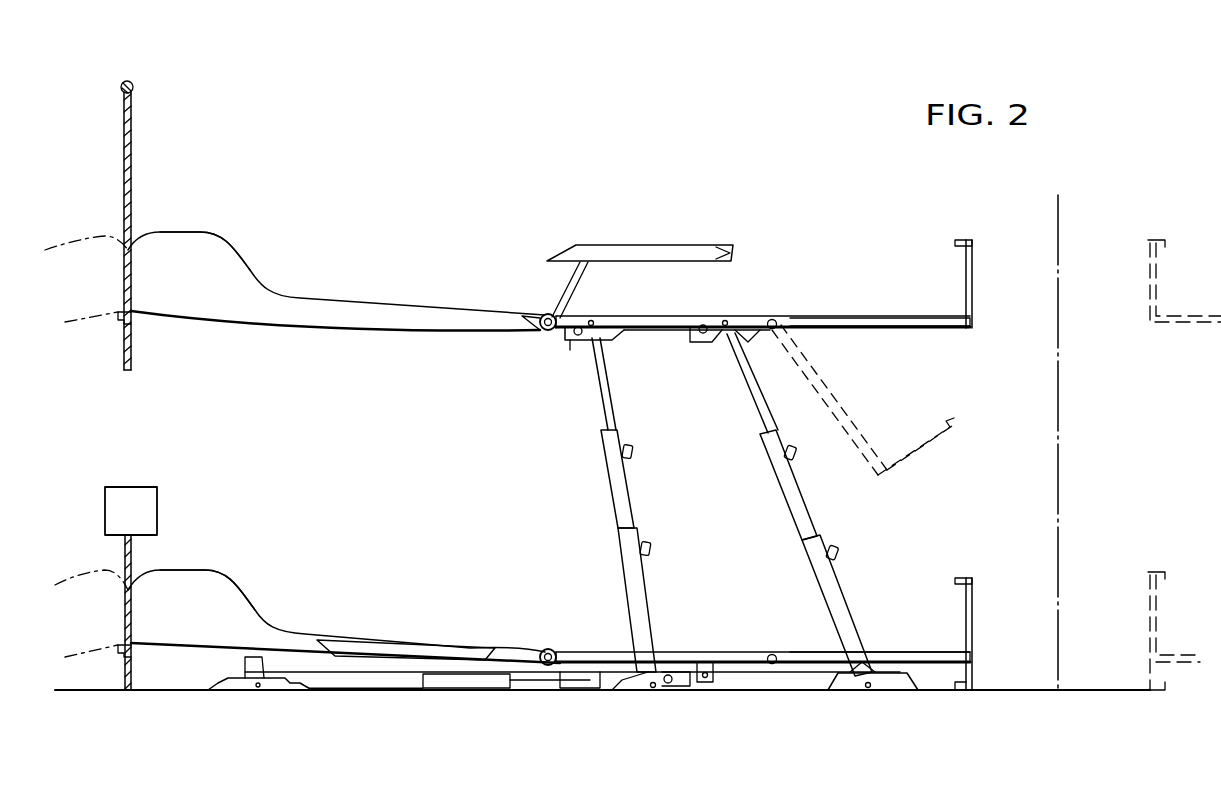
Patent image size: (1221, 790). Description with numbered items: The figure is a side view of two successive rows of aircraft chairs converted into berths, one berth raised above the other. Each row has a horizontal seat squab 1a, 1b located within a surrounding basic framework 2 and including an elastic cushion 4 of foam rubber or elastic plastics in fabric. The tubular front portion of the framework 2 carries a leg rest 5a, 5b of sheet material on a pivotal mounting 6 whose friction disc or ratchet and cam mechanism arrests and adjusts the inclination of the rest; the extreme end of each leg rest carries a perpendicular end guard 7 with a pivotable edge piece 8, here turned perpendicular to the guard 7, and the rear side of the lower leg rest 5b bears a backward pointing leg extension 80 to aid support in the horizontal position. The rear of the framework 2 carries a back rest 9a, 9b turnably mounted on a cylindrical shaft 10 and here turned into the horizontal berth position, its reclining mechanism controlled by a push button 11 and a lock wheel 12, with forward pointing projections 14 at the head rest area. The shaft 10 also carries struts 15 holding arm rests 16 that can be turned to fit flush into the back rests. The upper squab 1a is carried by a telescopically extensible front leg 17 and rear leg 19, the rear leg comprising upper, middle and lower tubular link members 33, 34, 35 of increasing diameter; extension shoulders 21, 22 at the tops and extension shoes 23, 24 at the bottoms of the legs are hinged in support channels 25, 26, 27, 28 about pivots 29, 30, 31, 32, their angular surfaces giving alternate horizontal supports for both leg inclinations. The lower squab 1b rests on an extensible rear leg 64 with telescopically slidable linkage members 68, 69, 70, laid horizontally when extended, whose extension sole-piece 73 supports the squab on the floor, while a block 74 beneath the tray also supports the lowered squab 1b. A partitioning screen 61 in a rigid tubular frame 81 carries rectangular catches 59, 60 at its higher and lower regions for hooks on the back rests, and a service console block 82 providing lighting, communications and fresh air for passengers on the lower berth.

The seat squab 1a is at (762, 310).
The seat squab 1b is at (708, 638).
The basic framework 2 is at (624, 338).
The elastic cushion 4 is at (777, 306).
The leg rest 5a is at (886, 328).
The leg rest 5b is at (916, 646).
The pivotal mounting 6 is at (783, 332).
The end guard 7 is at (970, 307).
The edge piece 8 is at (958, 239).
The back rest 9a is at (414, 312).
The back rest 9b is at (308, 638).
The cylindrical shaft 10 is at (546, 330).
The push button 11 is at (726, 256).
The lock wheel 12 is at (538, 327).
The forward pointing projection 14 is at (202, 248).
The strut 15 is at (516, 678).
The arm rest 16 is at (589, 252).
The front leg 17 is at (842, 568).
The rear leg 19 is at (640, 534).
The extension shoulder 21 is at (698, 333).
The extension shoulder 22 is at (575, 342).
The extension shoe 23 is at (875, 670).
The extension shoe 24 is at (634, 682).
The support channel 25 is at (744, 330).
The support channel 26 is at (611, 320).
The support channel 27 is at (842, 682).
The support channel 28 is at (674, 684).
The pivot 29 is at (724, 320).
The pivot 30 is at (597, 320).
The pivot 31 is at (866, 686).
The pivot 32 is at (666, 686).
The upper link member 33 is at (602, 409).
The middle link member 34 is at (622, 499).
The lower link member 35 is at (625, 552).
The rectangular catch 59 is at (140, 326).
The rectangular catch 60 is at (142, 648).
The partitioning screen 61 is at (127, 176).
The rear leg 64 is at (382, 688).
The linkage member 68 is at (558, 678).
The linkage member 69 is at (438, 683).
The linkage member 70 is at (352, 680).
The extension sole-piece 73 is at (588, 686).
The block 74 is at (708, 682).
The leg extension 80 is at (977, 661).
The tubular frame 81 is at (133, 94).
The service console block 82 is at (142, 494).